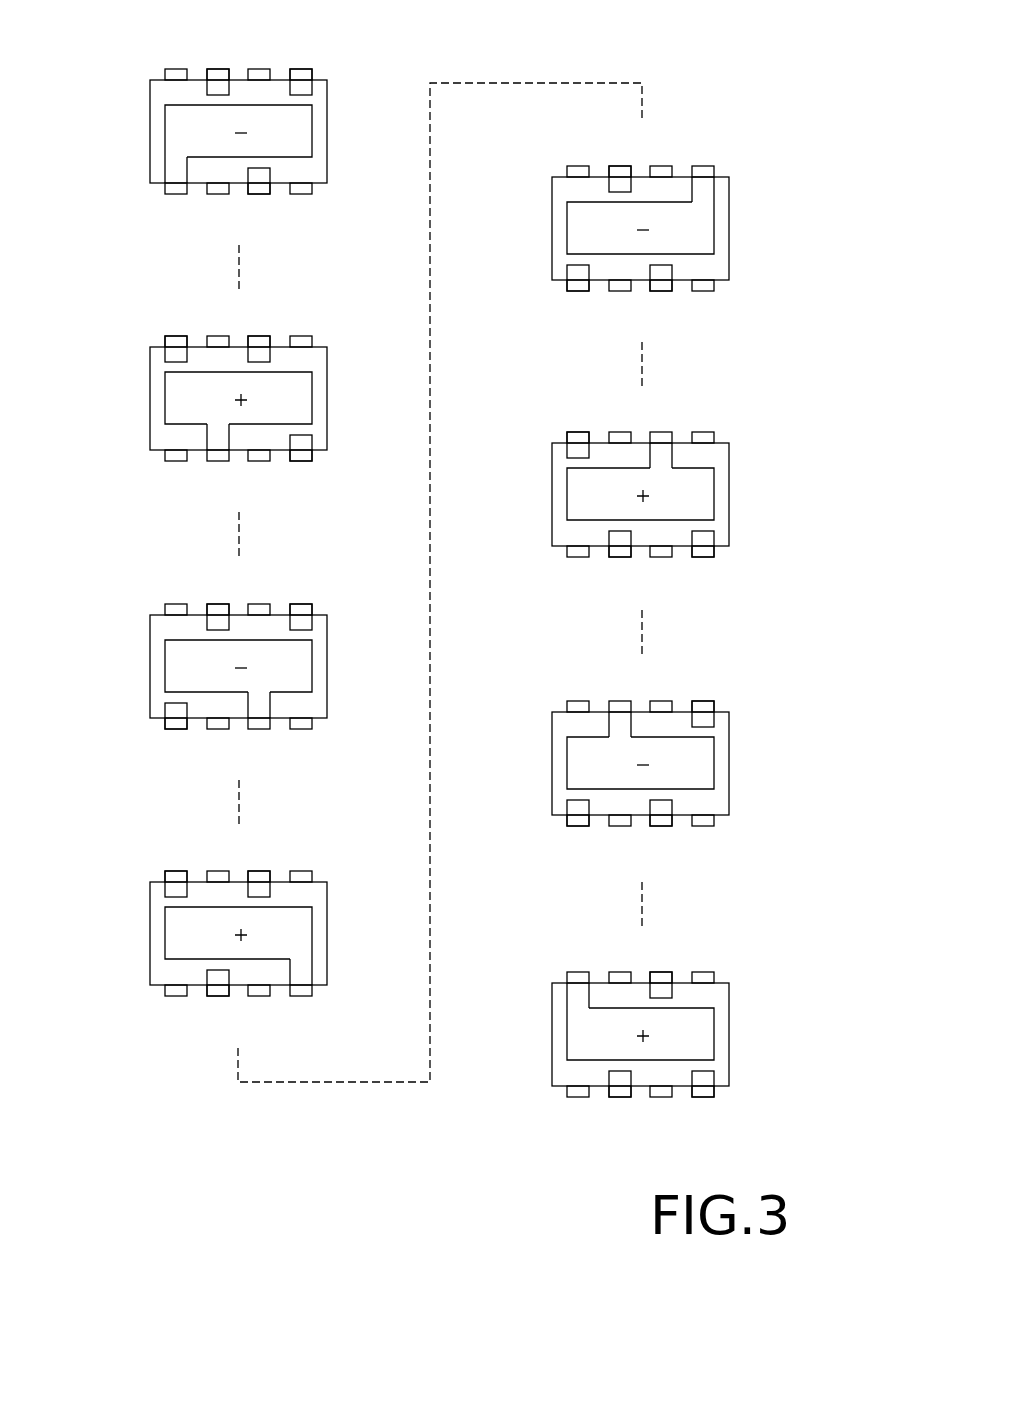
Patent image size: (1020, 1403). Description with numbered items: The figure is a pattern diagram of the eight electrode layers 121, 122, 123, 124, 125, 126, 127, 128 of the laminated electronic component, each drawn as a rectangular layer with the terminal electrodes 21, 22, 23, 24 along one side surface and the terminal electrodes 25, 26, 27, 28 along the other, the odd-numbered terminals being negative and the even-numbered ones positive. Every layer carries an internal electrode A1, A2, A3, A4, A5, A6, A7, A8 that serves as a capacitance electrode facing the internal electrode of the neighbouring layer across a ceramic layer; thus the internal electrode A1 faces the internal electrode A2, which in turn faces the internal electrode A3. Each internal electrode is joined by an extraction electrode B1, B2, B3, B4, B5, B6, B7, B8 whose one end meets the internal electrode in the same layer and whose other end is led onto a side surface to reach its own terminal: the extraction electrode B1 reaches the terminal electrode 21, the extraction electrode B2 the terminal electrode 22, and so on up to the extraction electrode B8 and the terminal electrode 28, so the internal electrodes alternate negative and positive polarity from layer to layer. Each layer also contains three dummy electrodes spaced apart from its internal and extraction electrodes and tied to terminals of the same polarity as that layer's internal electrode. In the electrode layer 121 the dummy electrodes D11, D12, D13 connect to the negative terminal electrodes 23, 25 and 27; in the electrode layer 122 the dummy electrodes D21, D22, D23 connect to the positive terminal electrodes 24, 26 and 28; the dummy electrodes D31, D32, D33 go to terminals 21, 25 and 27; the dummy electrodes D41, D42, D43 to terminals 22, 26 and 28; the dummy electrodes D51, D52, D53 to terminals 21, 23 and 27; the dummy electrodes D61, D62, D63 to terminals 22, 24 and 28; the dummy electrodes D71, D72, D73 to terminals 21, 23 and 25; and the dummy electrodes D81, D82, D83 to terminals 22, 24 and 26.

The electrode layer 121 is at (110, 140).
The electrode layer 122 is at (110, 404).
The electrode layer 123 is at (110, 676).
The electrode layer 124 is at (110, 941).
The electrode layer 125 is at (512, 239).
The electrode layer 126 is at (512, 502).
The electrode layer 127 is at (512, 771).
The electrode layer 128 is at (512, 1046).
The terminal electrode 21 is at (176, 194).
The terminal electrode 22 is at (218, 194).
The terminal electrode 23 is at (259, 194).
The terminal electrode 24 is at (301, 194).
The terminal electrode 25 is at (319, 57).
The terminal electrode 26 is at (272, 61).
The terminal electrode 27 is at (236, 57).
The terminal electrode 28 is at (189, 61).
The internal electrode A1 is at (303, 131).
The internal electrode A2 is at (303, 398).
The internal electrode A3 is at (303, 665).
The internal electrode A4 is at (303, 928).
The internal electrode A5 is at (705, 226).
The internal electrode A6 is at (705, 493).
The internal electrode A7 is at (705, 756).
The internal electrode A8 is at (705, 1028).
The extraction electrode B1 is at (176, 172).
The extraction electrode B2 is at (218, 440).
The extraction electrode B3 is at (259, 708).
The extraction electrode B4 is at (303, 975).
The extraction electrode B5 is at (703, 188).
The extraction electrode B6 is at (661, 455).
The extraction electrode B7 is at (620, 722).
The extraction electrode B8 is at (578, 995).
The dummy electrode D11 is at (259, 173).
The dummy electrode D12 is at (301, 86).
The dummy electrode D13 is at (216, 86).
The dummy electrode D21 is at (301, 446).
The dummy electrode D22 is at (259, 354).
The dummy electrode D23 is at (176, 352).
The dummy electrode D31 is at (176, 710).
The dummy electrode D32 is at (301, 625).
The dummy electrode D33 is at (218, 623).
The dummy electrode D41 is at (218, 973).
The dummy electrode D42 is at (259, 888).
The dummy electrode D43 is at (176, 890).
The dummy electrode D51 is at (578, 275).
The dummy electrode D52 is at (661, 276).
The dummy electrode D53 is at (620, 183).
The dummy electrode D61 is at (620, 541).
The dummy electrode D62 is at (703, 537).
The dummy electrode D63 is at (578, 452).
The dummy electrode D71 is at (578, 808).
The dummy electrode D72 is at (661, 807).
The dummy electrode D73 is at (703, 723).
The dummy electrode D81 is at (620, 1078).
The dummy electrode D82 is at (703, 1077).
The dummy electrode D83 is at (661, 988).